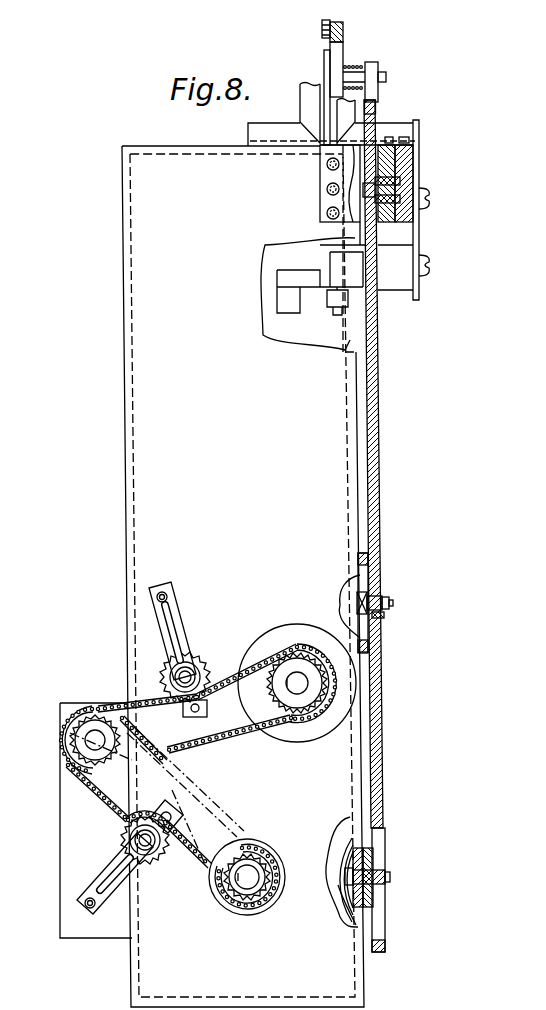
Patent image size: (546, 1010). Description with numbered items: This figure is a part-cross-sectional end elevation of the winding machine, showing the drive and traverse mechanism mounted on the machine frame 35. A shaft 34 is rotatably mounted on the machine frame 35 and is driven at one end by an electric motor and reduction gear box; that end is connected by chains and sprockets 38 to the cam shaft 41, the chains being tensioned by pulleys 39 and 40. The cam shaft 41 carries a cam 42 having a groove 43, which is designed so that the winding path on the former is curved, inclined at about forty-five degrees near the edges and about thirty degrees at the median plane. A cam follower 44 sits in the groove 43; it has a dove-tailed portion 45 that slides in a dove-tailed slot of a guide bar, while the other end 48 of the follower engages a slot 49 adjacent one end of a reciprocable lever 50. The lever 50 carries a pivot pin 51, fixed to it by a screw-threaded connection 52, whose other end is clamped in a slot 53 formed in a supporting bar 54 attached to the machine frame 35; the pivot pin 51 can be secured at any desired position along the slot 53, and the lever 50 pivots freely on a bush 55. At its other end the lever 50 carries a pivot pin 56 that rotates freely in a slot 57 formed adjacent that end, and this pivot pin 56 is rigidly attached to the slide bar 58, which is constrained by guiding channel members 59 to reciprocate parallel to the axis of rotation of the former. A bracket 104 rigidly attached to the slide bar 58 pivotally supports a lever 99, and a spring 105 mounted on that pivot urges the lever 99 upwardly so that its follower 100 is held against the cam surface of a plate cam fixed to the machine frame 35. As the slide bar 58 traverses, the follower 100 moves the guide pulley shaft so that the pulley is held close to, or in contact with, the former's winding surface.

The shaft 34 is at (300, 694).
The machine frame 35 is at (165, 970).
The chains and sprockets 38 is at (200, 790).
The pulley 39 is at (160, 858).
The pulley 40 is at (197, 665).
The cam shaft 41 is at (244, 881).
The cam 42 is at (331, 905).
The groove 43 is at (346, 918).
The cam follower 44 is at (340, 862).
The dove-tailed portion 45 is at (364, 866).
The other end of the follower 48 is at (386, 888).
The slot 49 is at (383, 904).
The reciprocable lever 50 is at (384, 692).
The pivot pin 51 is at (356, 598).
The screw-threaded connection 52 is at (385, 598).
The slot 53 is at (362, 572).
The supporting bar 54 is at (360, 556).
The bush 55 is at (379, 614).
The pivot pin 56 is at (370, 200).
The slot 57 is at (368, 122).
The slide bar 58 is at (370, 178).
The guiding channel members 59 is at (397, 210).
The lever 99 is at (325, 53).
The follower 100 is at (320, 27).
The bracket 104 is at (373, 93).
The spring 105 is at (347, 68).